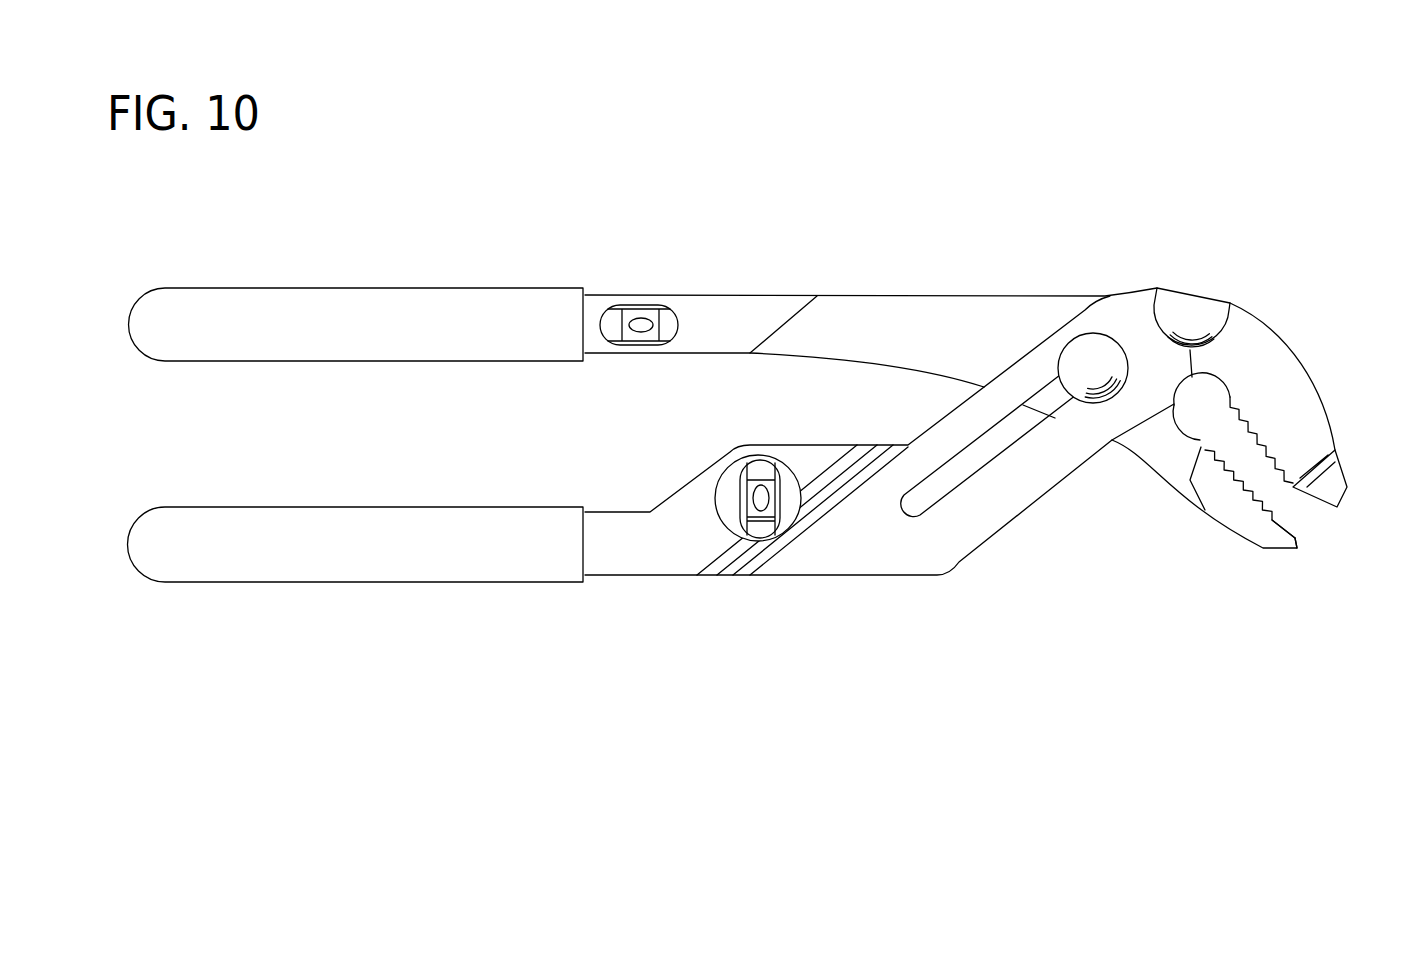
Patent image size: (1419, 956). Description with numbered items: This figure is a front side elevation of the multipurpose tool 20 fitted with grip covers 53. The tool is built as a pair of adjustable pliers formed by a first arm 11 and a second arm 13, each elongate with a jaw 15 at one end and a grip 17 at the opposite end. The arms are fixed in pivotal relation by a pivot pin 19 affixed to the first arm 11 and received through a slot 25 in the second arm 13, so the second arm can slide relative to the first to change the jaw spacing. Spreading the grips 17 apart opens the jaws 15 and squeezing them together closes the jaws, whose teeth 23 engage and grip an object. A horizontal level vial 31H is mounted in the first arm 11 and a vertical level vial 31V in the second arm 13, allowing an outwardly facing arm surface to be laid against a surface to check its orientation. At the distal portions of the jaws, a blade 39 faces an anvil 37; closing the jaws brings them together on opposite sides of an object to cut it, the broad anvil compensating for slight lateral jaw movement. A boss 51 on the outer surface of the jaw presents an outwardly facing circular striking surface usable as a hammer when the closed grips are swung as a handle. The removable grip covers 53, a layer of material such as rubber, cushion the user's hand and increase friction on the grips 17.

The first arm 11 is at (817, 272).
The second arm 13 is at (690, 593).
The jaw 15 is at (1262, 365).
The grip 17 is at (320, 542).
The pivot pin 19 is at (1095, 350).
The multipurpose tool 20 is at (892, 240).
The teeth 23 is at (1240, 483).
The slot 25 is at (970, 467).
The horizontal level vial 31H is at (660, 303).
The vertical level vial 31V is at (762, 528).
The anvil 37 is at (1297, 540).
The blade 39 is at (1322, 482).
The boss 51 is at (1198, 303).
The grip covers 53 is at (323, 307).